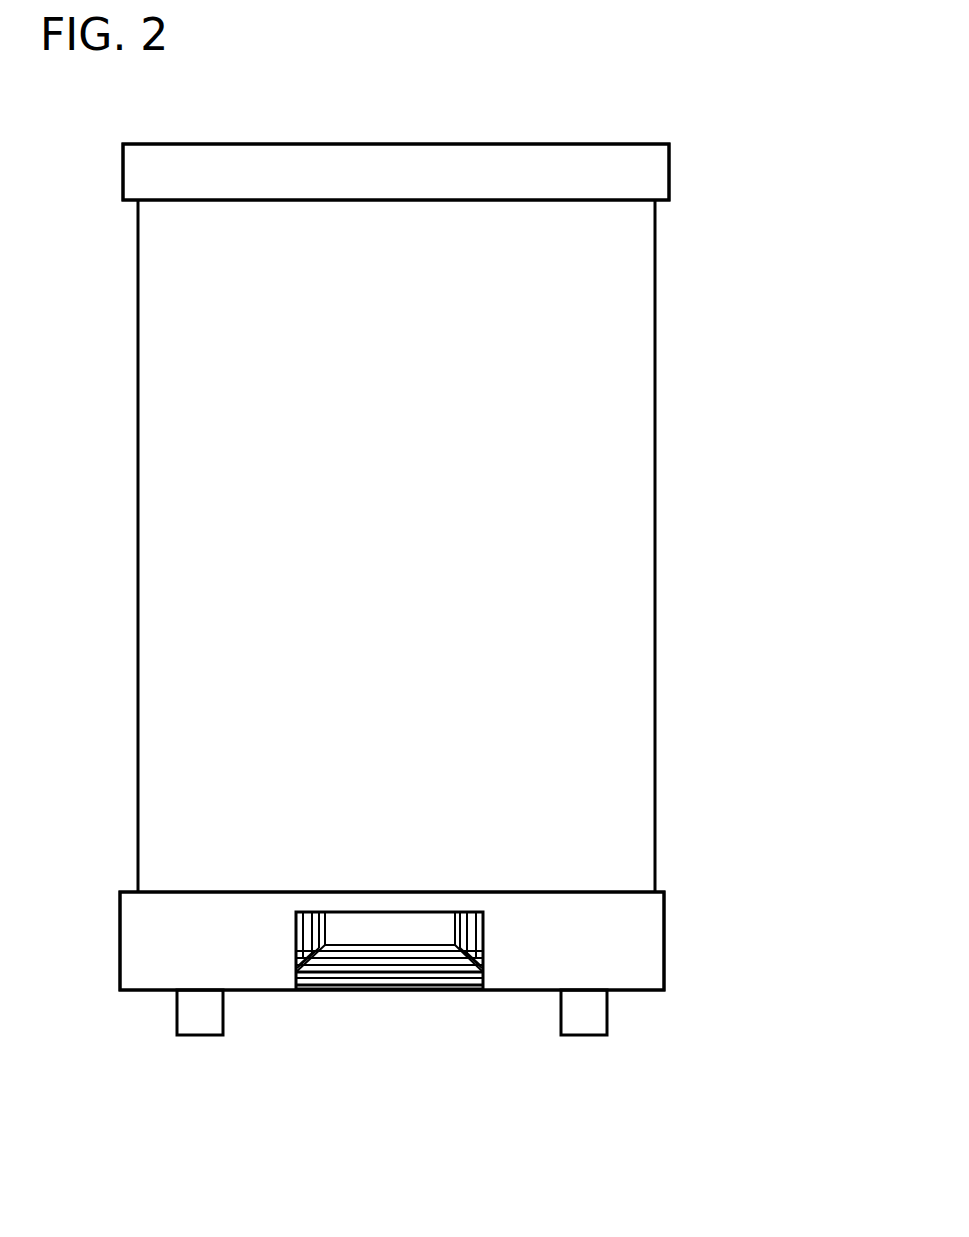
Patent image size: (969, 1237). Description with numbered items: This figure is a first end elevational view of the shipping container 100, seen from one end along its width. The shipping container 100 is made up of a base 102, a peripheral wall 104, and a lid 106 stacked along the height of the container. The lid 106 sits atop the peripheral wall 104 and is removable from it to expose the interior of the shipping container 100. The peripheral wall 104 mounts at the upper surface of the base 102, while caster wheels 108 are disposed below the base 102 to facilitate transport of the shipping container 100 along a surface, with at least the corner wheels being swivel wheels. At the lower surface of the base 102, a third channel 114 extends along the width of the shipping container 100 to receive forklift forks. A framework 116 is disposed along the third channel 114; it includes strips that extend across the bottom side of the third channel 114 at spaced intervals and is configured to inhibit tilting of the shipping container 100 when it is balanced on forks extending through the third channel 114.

The shipping container 100 is at (692, 346).
The base 102 is at (135, 940).
The peripheral wall 104 is at (163, 588).
The lid 106 is at (123, 163).
The caster wheels 108 is at (197, 1038).
The third channel 114 is at (390, 913).
The framework 116 is at (333, 990).